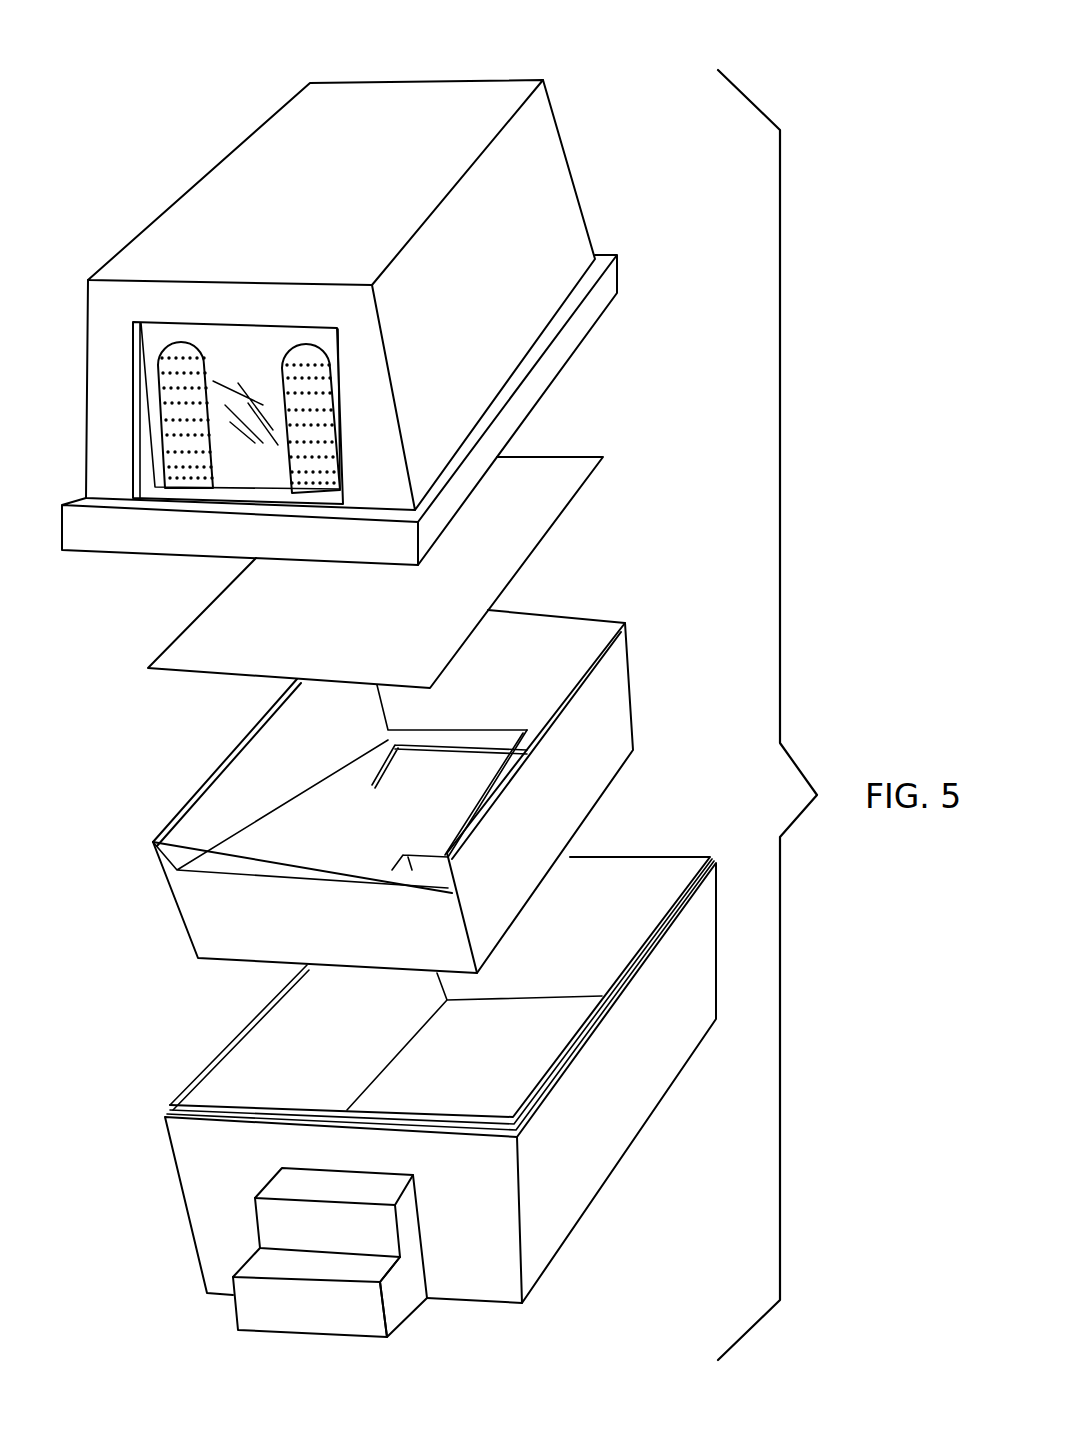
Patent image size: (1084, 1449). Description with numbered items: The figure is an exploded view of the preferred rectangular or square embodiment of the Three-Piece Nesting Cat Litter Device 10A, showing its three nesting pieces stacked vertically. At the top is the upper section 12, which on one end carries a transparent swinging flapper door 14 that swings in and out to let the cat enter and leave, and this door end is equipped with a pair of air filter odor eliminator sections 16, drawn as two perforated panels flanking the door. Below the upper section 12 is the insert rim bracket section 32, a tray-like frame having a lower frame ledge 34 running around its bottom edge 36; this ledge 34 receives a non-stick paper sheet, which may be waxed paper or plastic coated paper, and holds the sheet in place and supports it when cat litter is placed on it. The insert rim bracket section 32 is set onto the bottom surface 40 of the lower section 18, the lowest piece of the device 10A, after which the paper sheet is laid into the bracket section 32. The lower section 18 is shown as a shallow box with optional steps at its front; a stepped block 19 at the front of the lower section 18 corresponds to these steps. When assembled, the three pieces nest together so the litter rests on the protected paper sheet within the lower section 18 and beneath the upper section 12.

The Three-Piece Nesting Cat Litter Device 10A is at (190, 114).
The upper section 12 is at (225, 237).
The transparent swinging flapper door 14 is at (233, 453).
The air filter odor eliminator sections 16 is at (165, 387).
The bottom edge 36 is at (548, 472).
The insert rim bracket section 32 is at (237, 827).
The lower frame ledge 34 is at (338, 802).
The lower section 18 is at (558, 1169).
The bottom surface 40 is at (500, 1087).
The stepped block / connector housing 19 is at (267, 1267).